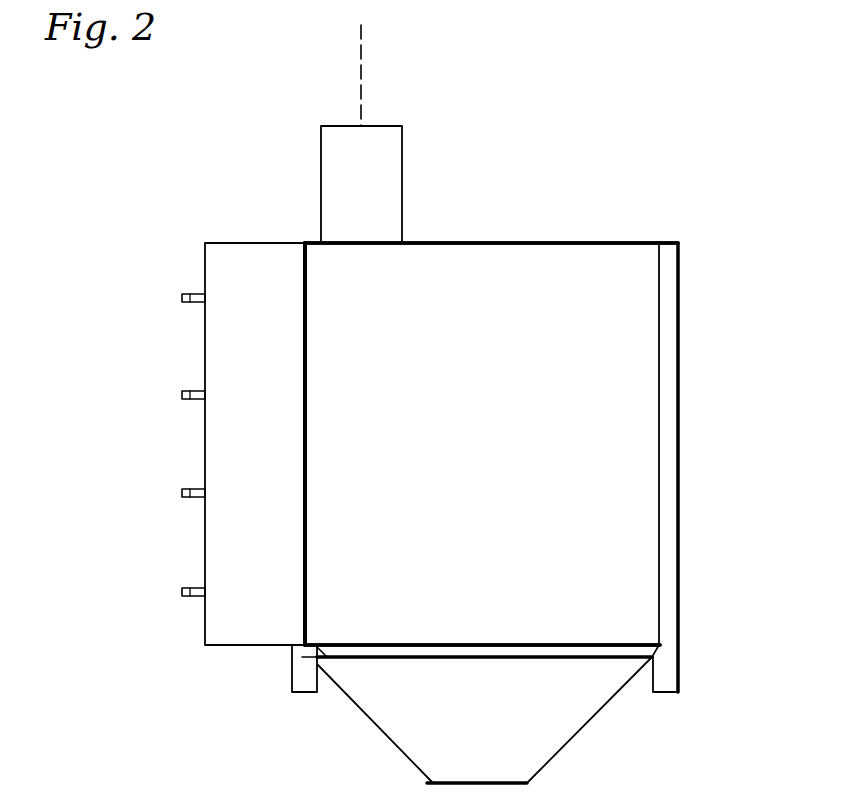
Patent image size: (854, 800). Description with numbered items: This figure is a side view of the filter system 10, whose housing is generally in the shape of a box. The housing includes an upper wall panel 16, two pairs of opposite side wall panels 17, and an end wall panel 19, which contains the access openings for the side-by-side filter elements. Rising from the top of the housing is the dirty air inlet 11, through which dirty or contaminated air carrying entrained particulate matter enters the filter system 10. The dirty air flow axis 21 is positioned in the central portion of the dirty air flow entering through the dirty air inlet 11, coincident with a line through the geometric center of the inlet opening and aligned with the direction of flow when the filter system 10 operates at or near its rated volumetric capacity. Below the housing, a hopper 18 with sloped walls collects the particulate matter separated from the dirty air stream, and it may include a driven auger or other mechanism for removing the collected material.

The filter system 10 is at (613, 153).
The dirty air inlet 11 is at (402, 158).
The upper wall panel 16 is at (575, 243).
The side wall panel 17 is at (470, 270).
The hopper 18 is at (550, 725).
The end wall panel 19 is at (678, 408).
The dirty air flow axis 21 is at (360, 100).